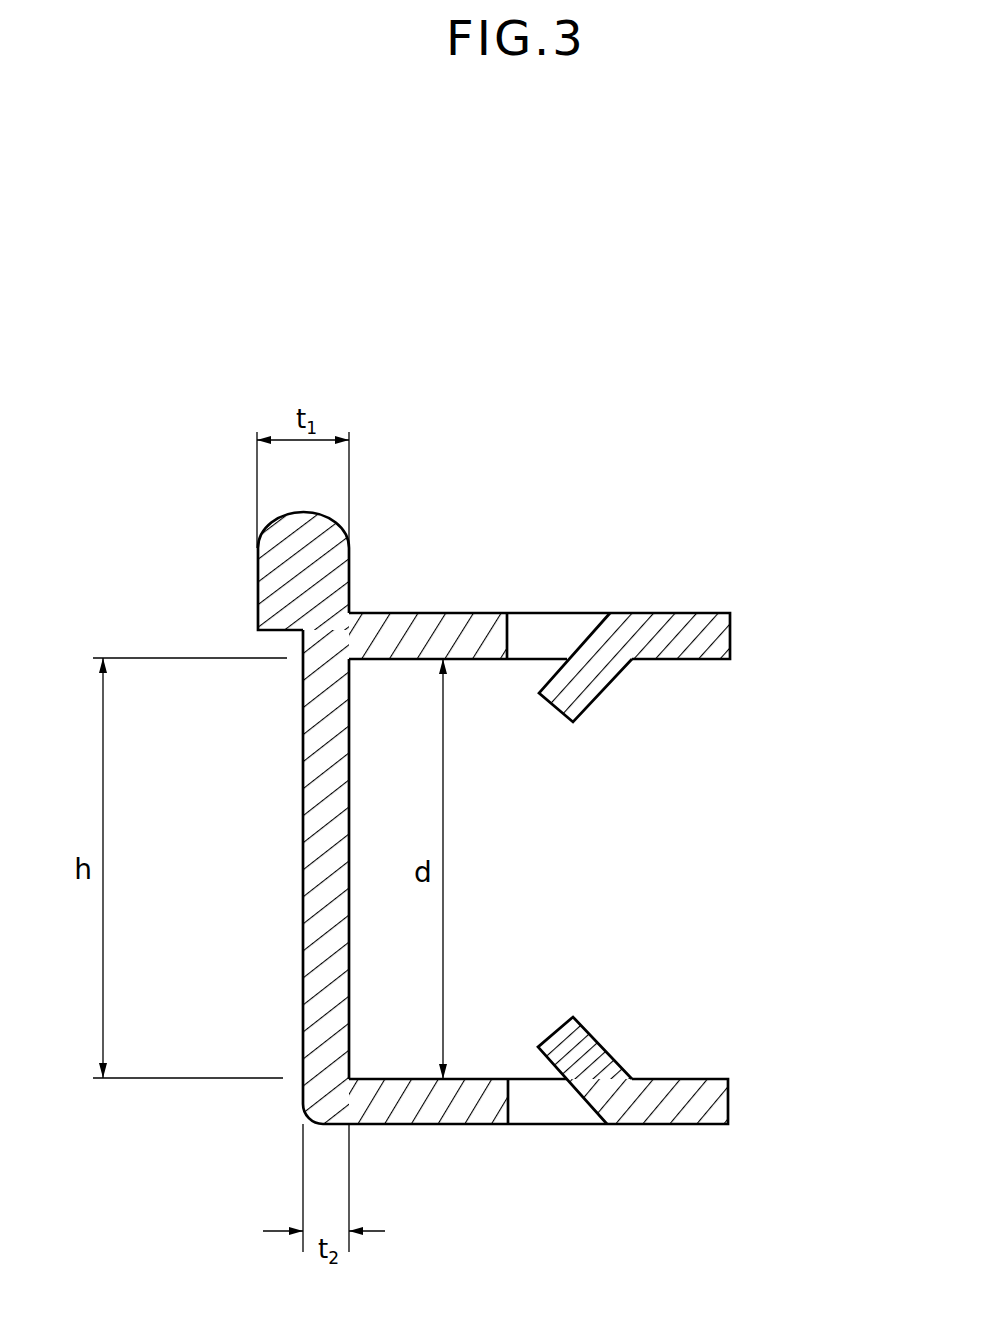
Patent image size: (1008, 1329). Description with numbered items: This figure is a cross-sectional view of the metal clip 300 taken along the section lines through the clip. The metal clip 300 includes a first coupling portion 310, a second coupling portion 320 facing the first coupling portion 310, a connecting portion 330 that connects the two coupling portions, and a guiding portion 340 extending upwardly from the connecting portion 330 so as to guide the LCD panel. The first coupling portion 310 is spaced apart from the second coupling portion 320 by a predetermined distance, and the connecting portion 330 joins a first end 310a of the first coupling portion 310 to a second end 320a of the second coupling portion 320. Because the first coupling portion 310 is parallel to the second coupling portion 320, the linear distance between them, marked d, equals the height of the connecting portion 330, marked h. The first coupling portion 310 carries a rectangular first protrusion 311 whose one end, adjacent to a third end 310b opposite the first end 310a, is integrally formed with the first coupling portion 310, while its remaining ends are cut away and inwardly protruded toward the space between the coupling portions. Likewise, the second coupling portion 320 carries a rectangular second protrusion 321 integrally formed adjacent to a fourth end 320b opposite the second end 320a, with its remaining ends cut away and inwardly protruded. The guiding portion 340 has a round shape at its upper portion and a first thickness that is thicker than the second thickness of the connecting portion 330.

The metal clip 300 is at (560, 349).
The first coupling portion 310 is at (491, 604).
The first end 310a is at (352, 632).
The third end 310b is at (730, 623).
The first protrusion 311 is at (603, 677).
The second coupling portion 320 is at (489, 1137).
The second end 320a is at (353, 1098).
The fourth end 320b is at (728, 1117).
The second protrusion 321 is at (607, 1050).
The connecting portion 330 is at (327, 883).
The guiding portion 340 is at (277, 569).